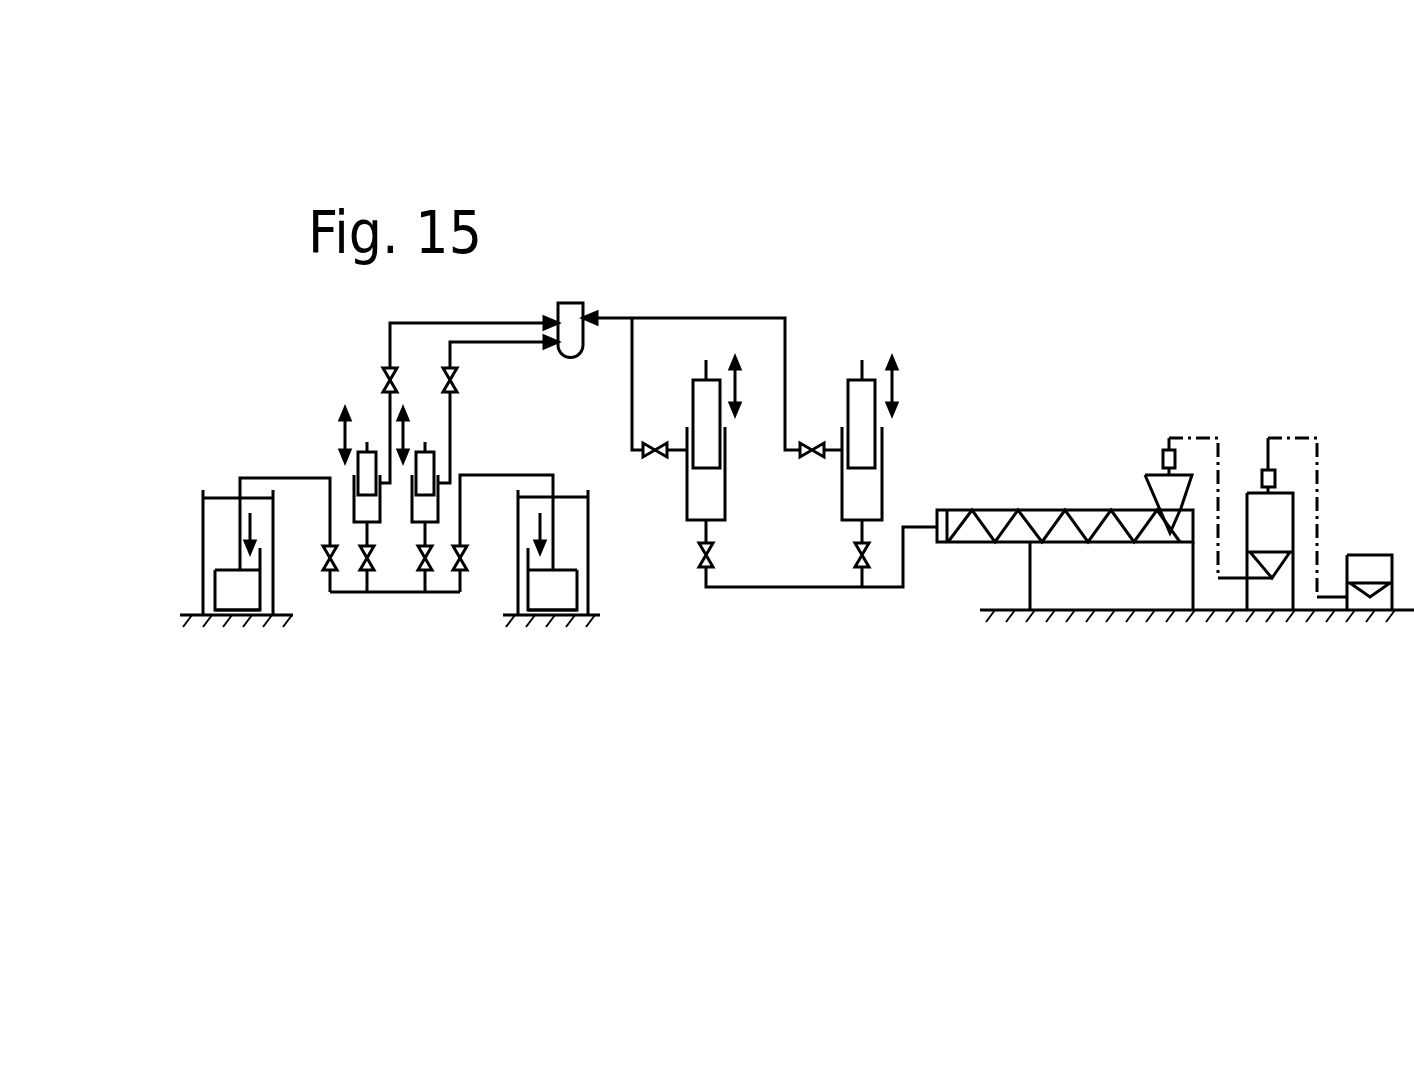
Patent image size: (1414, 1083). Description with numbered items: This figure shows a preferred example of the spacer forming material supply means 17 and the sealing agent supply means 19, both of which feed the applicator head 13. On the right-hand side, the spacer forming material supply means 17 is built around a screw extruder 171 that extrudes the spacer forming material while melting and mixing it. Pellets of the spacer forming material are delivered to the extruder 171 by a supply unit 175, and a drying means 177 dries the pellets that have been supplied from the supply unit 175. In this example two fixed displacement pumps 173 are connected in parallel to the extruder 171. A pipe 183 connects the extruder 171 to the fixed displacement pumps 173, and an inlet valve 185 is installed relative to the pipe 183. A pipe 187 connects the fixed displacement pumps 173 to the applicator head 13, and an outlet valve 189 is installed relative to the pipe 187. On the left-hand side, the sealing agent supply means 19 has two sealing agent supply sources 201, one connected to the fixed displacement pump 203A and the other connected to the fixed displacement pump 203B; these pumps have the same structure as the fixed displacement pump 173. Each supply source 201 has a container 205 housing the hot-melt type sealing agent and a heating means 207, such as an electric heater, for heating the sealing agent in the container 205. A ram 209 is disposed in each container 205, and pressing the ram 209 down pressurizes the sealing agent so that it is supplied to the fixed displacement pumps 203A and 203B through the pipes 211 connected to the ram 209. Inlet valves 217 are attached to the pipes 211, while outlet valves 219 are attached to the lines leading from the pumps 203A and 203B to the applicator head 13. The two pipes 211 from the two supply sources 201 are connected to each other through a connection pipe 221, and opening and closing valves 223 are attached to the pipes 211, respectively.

The applicator head 13 is at (577, 303).
The spacer forming material supply means 17 is at (1105, 420).
The sealing agent supply means 19 is at (305, 378).
The screw extruder 171 is at (1040, 510).
The fixed displacement pump 173 is at (725, 467).
The supply unit 175 is at (1368, 555).
The drying means 177 is at (1268, 490).
The pipe 183 is at (820, 588).
The inlet valve 185 is at (716, 556).
The pipe 187 is at (752, 318).
The outlet valve 189 is at (812, 442).
The sealing agent supply source 201 is at (203, 578).
The fixed displacement pump 203A is at (354, 494).
The fixed displacement pump 203B is at (412, 522).
The container 205 is at (215, 600).
The heating means 207 is at (238, 615).
The ram 209 is at (225, 570).
The pipe 211 is at (286, 478).
The inlet valve 217 is at (357, 592).
The outlet valve 219 is at (457, 380).
The connection pipe 221 is at (393, 595).
The opening and closing valve 223 is at (327, 563).